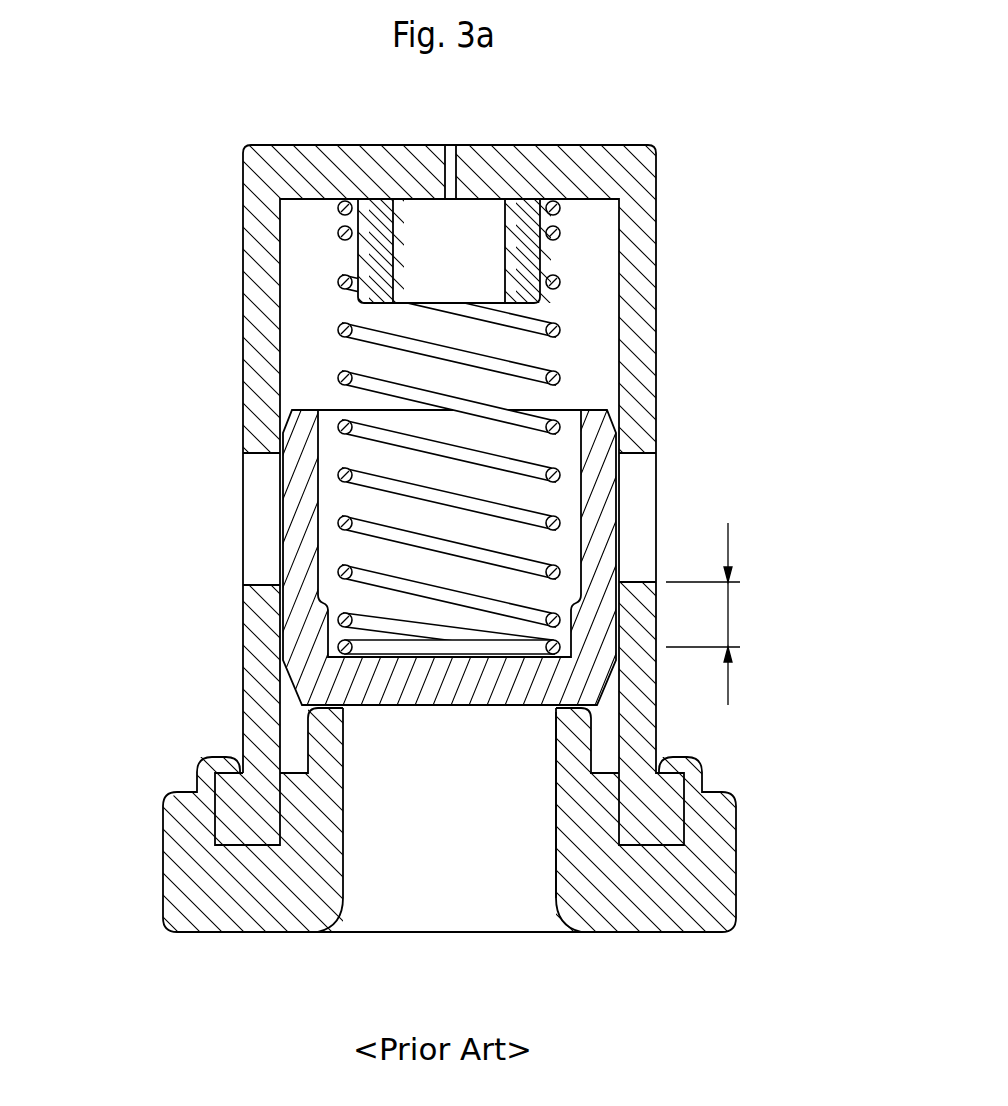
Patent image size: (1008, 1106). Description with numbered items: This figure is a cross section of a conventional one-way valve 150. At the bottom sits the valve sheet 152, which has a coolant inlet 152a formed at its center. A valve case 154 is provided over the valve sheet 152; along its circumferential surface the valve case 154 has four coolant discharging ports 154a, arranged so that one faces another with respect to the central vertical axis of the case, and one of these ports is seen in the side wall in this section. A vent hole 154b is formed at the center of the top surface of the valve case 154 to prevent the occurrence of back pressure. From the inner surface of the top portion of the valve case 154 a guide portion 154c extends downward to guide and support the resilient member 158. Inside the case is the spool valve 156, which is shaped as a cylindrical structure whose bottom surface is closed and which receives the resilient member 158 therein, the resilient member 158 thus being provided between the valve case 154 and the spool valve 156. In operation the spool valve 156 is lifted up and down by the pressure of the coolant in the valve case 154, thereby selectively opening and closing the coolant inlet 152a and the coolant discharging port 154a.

The one-way valve 150 is at (504, 553).
The valve sheet 152 is at (504, 553).
The coolant inlet 152a is at (555, 875).
The valve case 154 is at (504, 553).
The coolant discharging port 154a is at (247, 550).
The vent hole 154b is at (448, 172).
The guide portion 154c is at (370, 245).
The spool valve 156 is at (445, 640).
The resilient member 158 is at (556, 273).